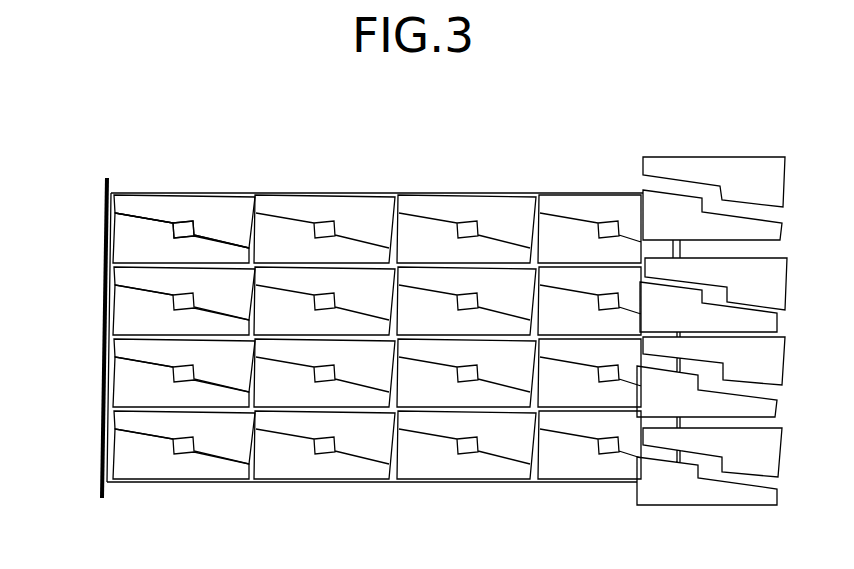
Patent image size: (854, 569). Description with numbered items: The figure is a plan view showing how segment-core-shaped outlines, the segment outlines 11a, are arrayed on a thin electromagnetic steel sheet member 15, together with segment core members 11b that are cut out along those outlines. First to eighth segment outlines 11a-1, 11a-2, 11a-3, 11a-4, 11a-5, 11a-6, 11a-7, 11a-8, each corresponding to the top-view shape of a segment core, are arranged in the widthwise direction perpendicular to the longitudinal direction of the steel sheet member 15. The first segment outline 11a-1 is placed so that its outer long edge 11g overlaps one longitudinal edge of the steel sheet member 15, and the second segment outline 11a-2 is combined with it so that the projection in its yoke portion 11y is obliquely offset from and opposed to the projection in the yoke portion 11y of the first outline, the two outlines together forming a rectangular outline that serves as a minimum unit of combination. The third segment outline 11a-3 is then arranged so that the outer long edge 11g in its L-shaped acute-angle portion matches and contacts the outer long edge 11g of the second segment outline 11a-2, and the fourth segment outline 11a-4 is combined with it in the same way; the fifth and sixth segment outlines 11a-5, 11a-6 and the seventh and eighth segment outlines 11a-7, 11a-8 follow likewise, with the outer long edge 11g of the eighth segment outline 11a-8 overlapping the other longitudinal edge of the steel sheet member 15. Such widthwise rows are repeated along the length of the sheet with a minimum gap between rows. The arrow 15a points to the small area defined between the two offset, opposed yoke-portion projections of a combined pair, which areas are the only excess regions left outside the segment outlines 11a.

The thin electromagnetic steel sheet member 15 is at (114, 192).
The arrow indicating excess region 15a is at (464, 225).
The segment outline 11a is at (325, 208).
The first segment outline 11a-1 is at (123, 204).
The second segment outline 11a-2 is at (123, 240).
The third segment outline 11a-3 is at (122, 275).
The fourth segment outline 11a-4 is at (122, 315).
The fifth segment outline 11a-5 is at (122, 347).
The sixth segment outline 11a-6 is at (122, 382).
The seventh segment outline 11a-7 is at (123, 422).
The eighth segment outline 11a-8 is at (122, 457).
The segment core member 11b is at (690, 168).
The outer long edge 11g is at (194, 193).
The yoke portion 11y is at (143, 225).